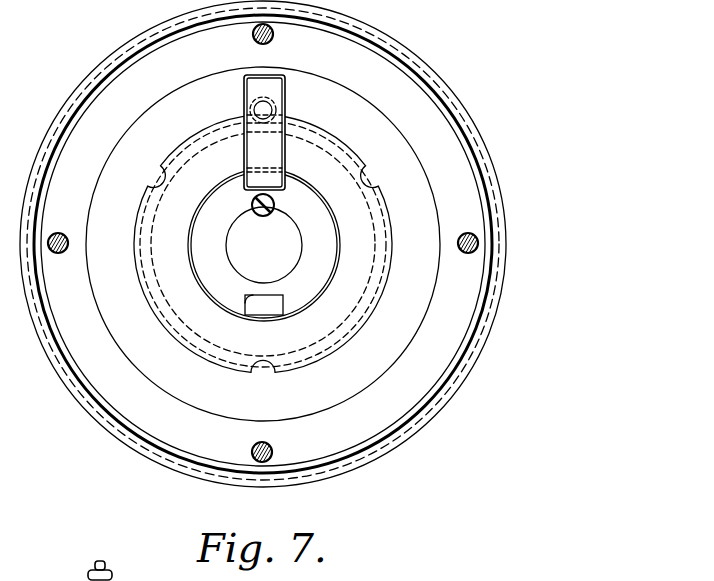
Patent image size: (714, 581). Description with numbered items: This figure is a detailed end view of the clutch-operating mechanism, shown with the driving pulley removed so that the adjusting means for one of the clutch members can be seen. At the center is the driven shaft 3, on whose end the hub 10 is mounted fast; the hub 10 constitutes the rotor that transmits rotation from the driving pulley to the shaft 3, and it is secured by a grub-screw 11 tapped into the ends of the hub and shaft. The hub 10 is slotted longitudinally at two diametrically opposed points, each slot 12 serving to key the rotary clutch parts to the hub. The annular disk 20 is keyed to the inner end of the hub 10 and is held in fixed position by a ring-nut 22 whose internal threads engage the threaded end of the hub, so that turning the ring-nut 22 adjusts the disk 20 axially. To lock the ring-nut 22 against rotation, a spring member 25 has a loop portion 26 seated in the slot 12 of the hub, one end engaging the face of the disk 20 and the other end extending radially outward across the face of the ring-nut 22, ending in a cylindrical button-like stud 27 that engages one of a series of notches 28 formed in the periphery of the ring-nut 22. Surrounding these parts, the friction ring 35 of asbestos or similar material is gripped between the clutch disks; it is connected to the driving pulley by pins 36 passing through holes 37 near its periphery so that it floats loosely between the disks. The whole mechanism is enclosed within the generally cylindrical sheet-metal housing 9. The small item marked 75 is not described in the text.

The driven shaft 3 is at (264, 245).
The housing 9 is at (492, 302).
The hub 10 is at (264, 245).
The grub-screw 11 is at (262, 239).
The slot 12 is at (245, 189).
The annular disk 20 is at (263, 244).
The ring-nut 22 is at (297, 329).
The spring member 25 is at (264, 132).
The loop portion 26 is at (279, 190).
The stud 27 is at (274, 106).
The notches 28 is at (162, 168).
The friction ring 35 is at (166, 62).
The pins 36 is at (274, 33).
The holes 37 is at (256, 41).
The small fitting 75 is at (88, 566).